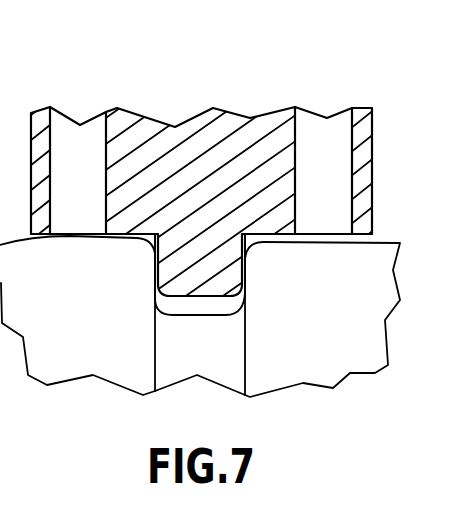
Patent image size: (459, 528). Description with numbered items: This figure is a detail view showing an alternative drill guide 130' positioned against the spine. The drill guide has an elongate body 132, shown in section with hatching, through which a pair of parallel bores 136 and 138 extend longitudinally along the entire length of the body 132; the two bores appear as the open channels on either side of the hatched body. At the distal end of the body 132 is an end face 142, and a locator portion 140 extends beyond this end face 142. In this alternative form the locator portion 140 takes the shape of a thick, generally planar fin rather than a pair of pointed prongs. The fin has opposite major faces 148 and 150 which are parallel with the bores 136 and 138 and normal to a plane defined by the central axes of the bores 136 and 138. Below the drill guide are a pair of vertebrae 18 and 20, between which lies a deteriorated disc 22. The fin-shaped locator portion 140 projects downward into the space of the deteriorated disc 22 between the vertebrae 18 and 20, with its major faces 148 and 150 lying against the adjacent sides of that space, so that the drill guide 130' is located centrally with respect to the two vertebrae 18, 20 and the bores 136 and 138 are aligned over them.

The alternative drill guide 130' is at (200, 144).
The elongate body 132 is at (250, 118).
The bore 136 is at (81, 128).
The bore 138 is at (326, 118).
The locator portion 140 is at (213, 280).
The end face 142 is at (153, 237).
The major face 148 is at (154, 266).
The major face 150 is at (246, 271).
The vertebra 18 is at (95, 358).
The deteriorated disc 22 is at (198, 362).
The vertebra 20 is at (305, 370).